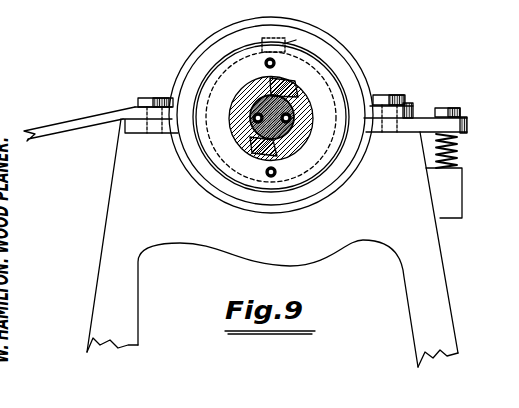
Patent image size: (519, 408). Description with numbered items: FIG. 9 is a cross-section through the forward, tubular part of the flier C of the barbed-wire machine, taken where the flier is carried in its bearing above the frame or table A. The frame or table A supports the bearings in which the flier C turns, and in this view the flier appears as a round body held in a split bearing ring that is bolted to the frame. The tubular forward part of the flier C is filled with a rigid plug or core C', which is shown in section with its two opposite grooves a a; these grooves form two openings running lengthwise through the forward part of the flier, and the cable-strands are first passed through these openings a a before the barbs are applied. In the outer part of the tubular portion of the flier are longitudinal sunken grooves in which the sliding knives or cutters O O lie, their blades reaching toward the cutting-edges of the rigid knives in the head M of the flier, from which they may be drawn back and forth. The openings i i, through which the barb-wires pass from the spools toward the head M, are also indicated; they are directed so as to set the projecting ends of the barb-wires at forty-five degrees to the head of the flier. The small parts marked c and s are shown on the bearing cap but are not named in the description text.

The frame or table A is at (245, 231).
The flier C is at (271, 115).
The rigid plug or core C' is at (283, 119).
The grooves a is at (231, 124).
The key pocket c is at (268, 41).
The set screw s is at (292, 39).
The openings i is at (270, 116).
The sliding knives or cutters O is at (286, 79).
The forward end or head of the flier M is at (250, 143).